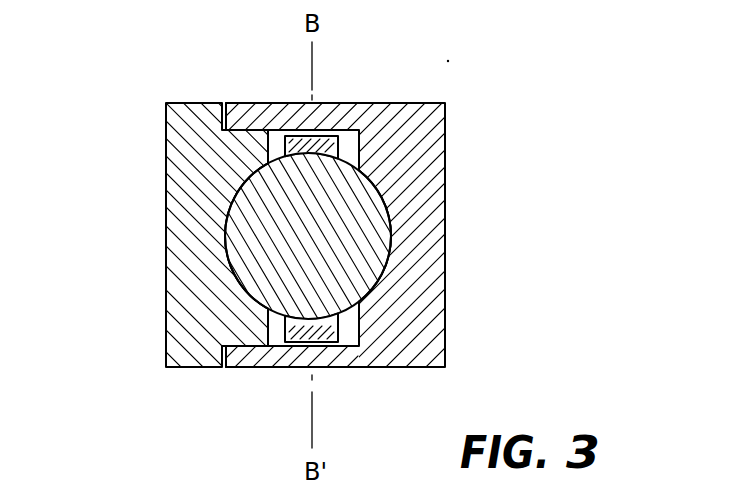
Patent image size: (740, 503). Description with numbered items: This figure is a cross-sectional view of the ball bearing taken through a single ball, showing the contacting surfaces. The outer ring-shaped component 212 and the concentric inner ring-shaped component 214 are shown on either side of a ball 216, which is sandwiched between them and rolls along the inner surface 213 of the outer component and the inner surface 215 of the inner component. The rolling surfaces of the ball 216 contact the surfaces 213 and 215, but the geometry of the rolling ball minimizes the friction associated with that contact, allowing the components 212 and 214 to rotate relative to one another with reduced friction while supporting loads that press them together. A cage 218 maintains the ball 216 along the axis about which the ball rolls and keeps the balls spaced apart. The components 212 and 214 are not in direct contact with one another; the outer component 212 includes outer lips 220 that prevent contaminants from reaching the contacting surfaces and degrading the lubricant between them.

The outer ring-shaped component 212 is at (432, 284).
The inner surface of outer component 213 is at (388, 198).
The inner ring-shaped component 214 is at (180, 267).
The inner surface of inner component 215 is at (230, 210).
The ball 216 is at (355, 282).
The cage 218 is at (330, 146).
The outer lips 220 is at (238, 103).